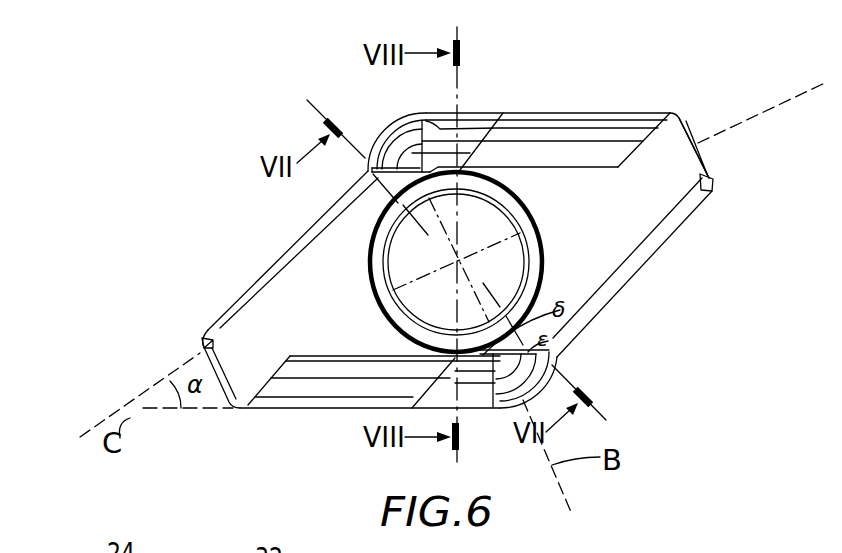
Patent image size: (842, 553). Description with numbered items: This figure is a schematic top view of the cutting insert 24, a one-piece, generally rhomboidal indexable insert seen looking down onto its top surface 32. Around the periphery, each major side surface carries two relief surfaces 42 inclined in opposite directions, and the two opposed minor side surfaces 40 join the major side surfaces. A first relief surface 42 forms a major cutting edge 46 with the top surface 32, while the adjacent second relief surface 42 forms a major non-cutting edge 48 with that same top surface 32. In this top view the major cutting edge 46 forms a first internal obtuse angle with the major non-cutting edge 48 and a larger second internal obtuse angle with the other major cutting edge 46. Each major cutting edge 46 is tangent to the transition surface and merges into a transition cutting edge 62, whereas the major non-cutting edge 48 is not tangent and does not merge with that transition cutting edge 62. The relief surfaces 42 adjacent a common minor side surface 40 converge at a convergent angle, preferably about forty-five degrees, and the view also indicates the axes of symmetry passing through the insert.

The cutting insert 24 is at (188, 84).
The top surface 32 is at (664, 165).
The minor side surface 40 is at (742, 110).
The relief surface 42 is at (667, 232).
The major cutting edge 46 is at (514, 112).
The major non-cutting edge 48 is at (691, 199).
The transition cutting edge 62 is at (376, 130).